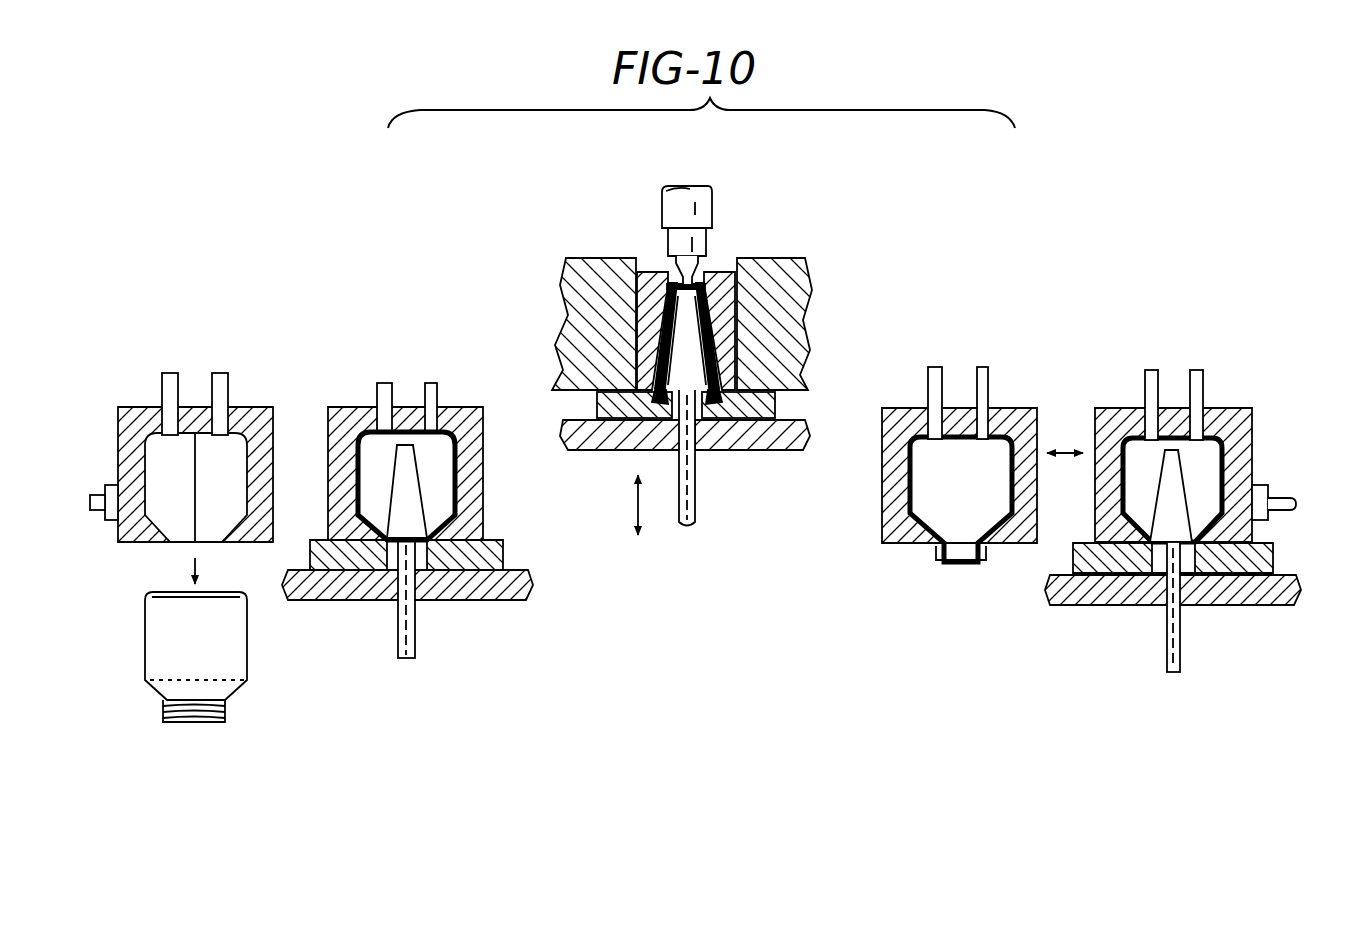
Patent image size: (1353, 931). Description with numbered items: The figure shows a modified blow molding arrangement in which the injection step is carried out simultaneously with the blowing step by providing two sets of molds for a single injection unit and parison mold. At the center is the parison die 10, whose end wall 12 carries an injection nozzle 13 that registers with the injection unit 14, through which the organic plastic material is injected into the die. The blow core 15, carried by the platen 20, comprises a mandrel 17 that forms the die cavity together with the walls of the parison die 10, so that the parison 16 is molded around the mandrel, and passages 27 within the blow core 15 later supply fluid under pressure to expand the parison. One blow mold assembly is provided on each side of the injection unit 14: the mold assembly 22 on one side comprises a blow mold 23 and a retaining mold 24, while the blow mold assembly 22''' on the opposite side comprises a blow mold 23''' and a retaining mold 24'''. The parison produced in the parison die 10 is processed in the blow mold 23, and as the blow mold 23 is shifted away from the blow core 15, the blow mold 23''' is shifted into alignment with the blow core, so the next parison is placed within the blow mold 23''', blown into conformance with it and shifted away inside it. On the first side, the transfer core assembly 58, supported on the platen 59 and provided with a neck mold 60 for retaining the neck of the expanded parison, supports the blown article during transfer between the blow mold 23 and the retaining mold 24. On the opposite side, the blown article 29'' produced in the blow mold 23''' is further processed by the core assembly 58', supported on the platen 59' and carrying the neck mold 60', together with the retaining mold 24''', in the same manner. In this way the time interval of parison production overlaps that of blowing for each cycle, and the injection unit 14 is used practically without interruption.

The parison die 10 is at (632, 320).
The end wall 12 is at (672, 285).
The injection nozzle 13 is at (700, 292).
The injection unit 14 is at (702, 208).
The blow core 15 is at (698, 327).
The parison 16 is at (703, 346).
The mandrel 17 is at (697, 519).
The platen 20 is at (593, 444).
The passages 27 is at (697, 488).
The mold assembly 22 is at (1090, 374).
The blow mold 23 is at (966, 442).
The retaining mold 24 is at (1196, 455).
The transfer core assembly 58 is at (1187, 496).
The platen 59 is at (1173, 618).
The neck mold 60 is at (1203, 549).
The blow mold assembly 22''' is at (371, 369).
The blow mold 23''' is at (424, 445).
The retaining mold 24''' is at (198, 441).
The core assembly 58' is at (386, 585).
The platen 59' is at (407, 618).
The neck mold 60' is at (382, 600).
The blown article 29'' is at (682, 586).